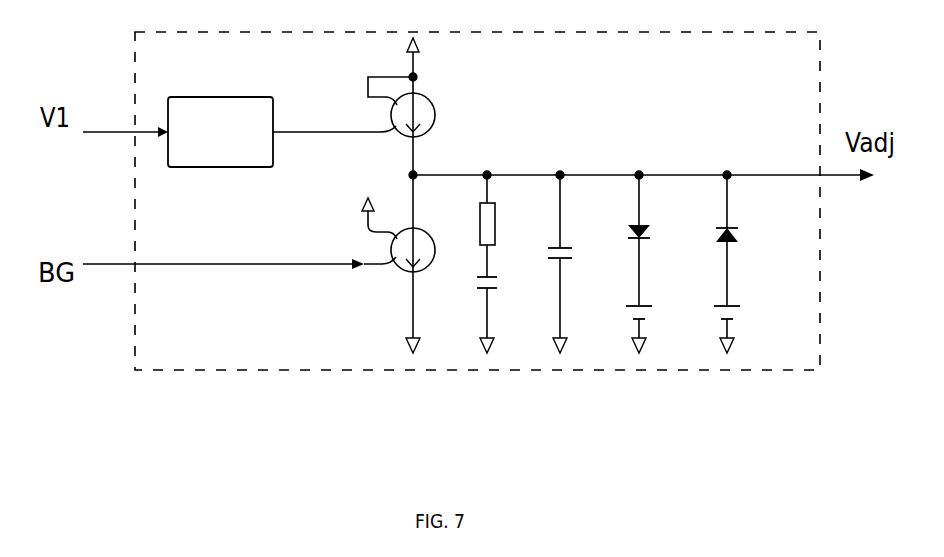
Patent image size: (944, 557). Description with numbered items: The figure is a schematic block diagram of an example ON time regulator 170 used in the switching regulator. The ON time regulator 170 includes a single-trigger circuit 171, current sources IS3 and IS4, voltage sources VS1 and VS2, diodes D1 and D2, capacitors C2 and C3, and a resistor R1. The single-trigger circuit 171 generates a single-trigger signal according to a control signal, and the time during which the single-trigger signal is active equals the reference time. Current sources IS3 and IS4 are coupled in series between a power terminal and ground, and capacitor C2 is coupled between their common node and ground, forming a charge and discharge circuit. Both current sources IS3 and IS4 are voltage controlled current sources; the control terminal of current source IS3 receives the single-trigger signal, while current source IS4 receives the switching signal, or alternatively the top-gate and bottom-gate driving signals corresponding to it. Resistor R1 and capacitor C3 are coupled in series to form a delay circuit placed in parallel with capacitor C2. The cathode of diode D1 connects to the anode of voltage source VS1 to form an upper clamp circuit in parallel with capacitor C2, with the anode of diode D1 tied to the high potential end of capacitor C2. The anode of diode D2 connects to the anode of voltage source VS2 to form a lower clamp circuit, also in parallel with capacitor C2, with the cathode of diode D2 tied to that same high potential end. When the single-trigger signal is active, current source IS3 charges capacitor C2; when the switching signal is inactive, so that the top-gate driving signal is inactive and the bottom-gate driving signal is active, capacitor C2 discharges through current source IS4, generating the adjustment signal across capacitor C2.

The ON time regulator 170 is at (726, 89).
The single-trigger circuit 171 is at (245, 167).
The current source IS3 is at (418, 106).
The current source IS4 is at (410, 264).
The resistor R1 is at (503, 226).
The capacitor C2 is at (578, 264).
The capacitor C3 is at (502, 313).
The diode D1 is at (656, 240).
The diode D2 is at (747, 240).
The voltage source VS1 is at (657, 318).
The voltage source VS2 is at (751, 321).